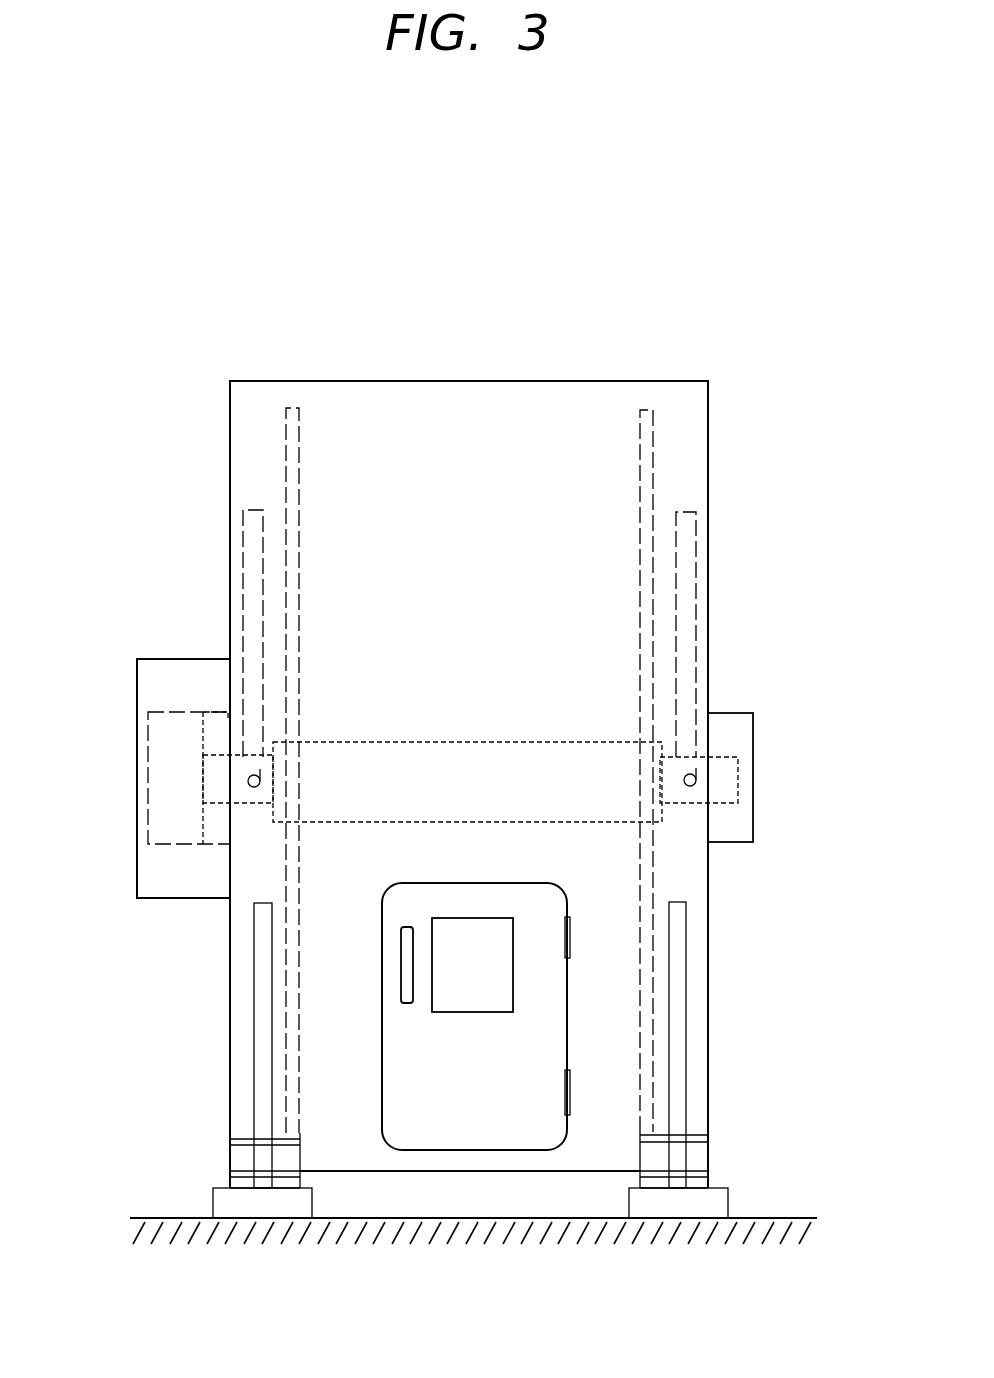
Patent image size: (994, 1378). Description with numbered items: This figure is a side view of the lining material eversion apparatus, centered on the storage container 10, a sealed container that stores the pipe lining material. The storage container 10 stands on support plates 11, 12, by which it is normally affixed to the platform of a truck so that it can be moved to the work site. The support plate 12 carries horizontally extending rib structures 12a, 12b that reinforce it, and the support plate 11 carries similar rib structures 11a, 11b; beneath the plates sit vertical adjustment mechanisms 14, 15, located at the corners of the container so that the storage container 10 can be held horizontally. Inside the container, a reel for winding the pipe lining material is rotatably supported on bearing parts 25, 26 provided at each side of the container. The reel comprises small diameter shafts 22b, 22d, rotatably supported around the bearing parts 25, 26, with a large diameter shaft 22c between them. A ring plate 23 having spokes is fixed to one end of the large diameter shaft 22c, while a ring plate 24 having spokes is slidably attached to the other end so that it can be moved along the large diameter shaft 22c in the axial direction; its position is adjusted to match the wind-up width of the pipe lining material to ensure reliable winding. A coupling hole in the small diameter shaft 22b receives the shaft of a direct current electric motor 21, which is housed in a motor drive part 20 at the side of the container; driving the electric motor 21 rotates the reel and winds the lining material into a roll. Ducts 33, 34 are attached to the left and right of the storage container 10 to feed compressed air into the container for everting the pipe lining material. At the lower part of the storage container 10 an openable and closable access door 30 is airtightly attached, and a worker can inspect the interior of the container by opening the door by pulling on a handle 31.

The storage container 10 is at (447, 380).
The support plate 11 is at (686, 965).
The rib structure 11a is at (712, 1140).
The rib structure 11b is at (712, 1178).
The support plate 12 is at (255, 1005).
The rib structure 12a is at (229, 1141).
The rib structure 12b is at (229, 1177).
The vertical adjustment mechanism 14 is at (280, 1207).
The vertical adjustment mechanism 15 is at (670, 1205).
The motor drive part 20 is at (137, 852).
The direct current electric motor 21 is at (148, 747).
The small diameter shaft 22b is at (243, 803).
The large diameter shaft 22c is at (463, 742).
The small diameter shaft 22d is at (667, 803).
The ring plate 23 is at (292, 407).
The ring plate 24 is at (643, 407).
The bearing part 25 is at (222, 708).
The bearing part 26 is at (730, 713).
The access door 30 is at (509, 1125).
The handle 31 is at (402, 960).
The duct 33 is at (243, 570).
The duct 34 is at (697, 588).